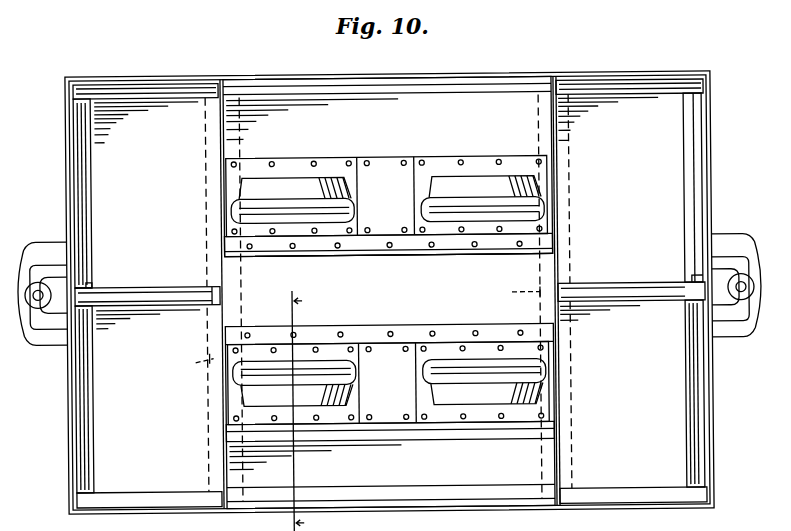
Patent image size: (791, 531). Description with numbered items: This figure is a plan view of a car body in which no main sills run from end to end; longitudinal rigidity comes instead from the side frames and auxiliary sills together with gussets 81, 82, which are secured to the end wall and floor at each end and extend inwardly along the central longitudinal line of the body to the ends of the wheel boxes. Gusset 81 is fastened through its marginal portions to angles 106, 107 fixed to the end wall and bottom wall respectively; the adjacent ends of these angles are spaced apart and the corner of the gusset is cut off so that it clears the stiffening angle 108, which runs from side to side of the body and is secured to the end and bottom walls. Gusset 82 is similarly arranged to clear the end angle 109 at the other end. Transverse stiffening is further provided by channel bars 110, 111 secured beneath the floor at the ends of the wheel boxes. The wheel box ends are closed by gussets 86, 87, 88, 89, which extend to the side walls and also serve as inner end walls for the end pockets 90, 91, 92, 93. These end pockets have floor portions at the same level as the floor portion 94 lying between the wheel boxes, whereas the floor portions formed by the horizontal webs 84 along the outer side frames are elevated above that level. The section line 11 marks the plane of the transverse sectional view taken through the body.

The section line 11 is at (300, 404).
The gusset 81 is at (135, 287).
The gusset 82 is at (608, 284).
The horizontal web 84 is at (389, 292).
The gusset 86 is at (226, 169).
The gusset 87 is at (555, 186).
The gusset 88 is at (226, 407).
The gusset 89 is at (555, 398).
The end pocket 90 is at (143, 118).
The end pocket 91 is at (112, 443).
The end pocket 92 is at (665, 160).
The end pocket 93 is at (670, 443).
The floor portion 94 is at (389, 277).
The angle 106 is at (80, 284).
The angle 107 is at (159, 303).
The stiffening angle 108 is at (98, 221).
The end angle 109 is at (690, 193).
The channel bar 110 is at (190, 366).
The channel bar 111 is at (513, 293).